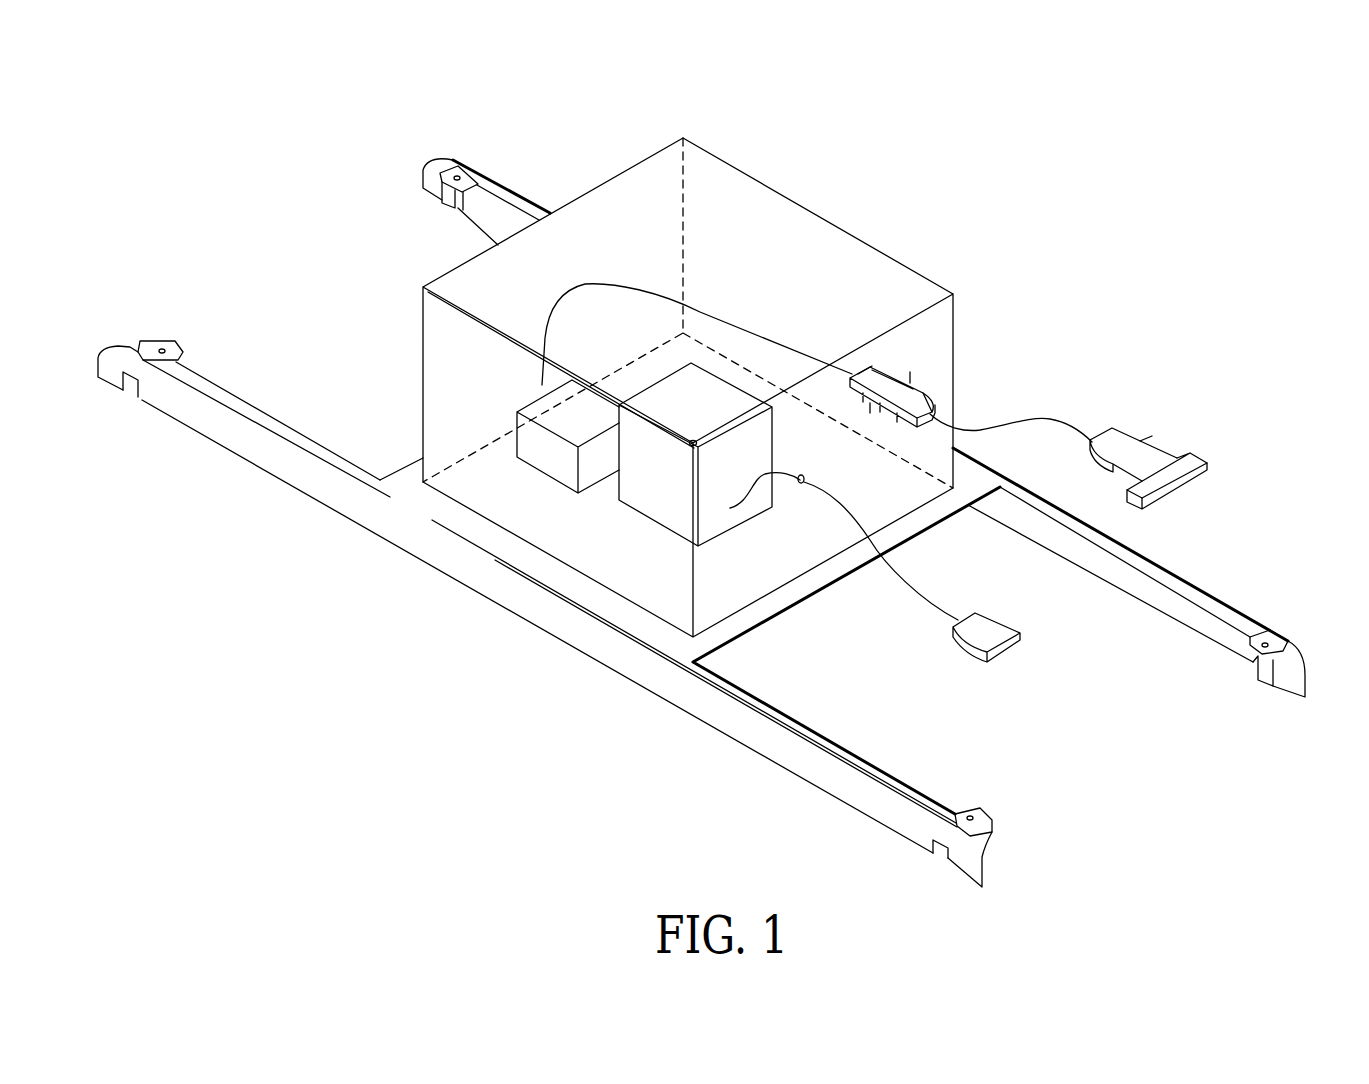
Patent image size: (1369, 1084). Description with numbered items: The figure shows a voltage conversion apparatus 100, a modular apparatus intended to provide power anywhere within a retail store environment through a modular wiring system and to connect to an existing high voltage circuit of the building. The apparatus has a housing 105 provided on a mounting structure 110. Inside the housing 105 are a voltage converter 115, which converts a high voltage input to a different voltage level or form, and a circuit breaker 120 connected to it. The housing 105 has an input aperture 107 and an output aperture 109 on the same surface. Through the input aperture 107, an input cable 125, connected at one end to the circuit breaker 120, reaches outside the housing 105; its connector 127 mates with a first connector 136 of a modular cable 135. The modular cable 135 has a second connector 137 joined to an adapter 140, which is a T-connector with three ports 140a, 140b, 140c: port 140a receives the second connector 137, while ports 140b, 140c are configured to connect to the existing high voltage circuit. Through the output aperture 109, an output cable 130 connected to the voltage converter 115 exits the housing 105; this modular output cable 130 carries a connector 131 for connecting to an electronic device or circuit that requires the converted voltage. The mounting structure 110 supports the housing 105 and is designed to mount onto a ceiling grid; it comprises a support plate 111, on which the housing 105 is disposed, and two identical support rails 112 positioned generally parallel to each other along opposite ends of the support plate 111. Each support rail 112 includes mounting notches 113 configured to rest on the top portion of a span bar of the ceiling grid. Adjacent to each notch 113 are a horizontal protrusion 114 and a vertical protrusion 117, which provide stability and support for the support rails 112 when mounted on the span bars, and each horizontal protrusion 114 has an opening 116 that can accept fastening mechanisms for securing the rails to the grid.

The voltage conversion apparatus 100 is at (900, 143).
The housing 105 is at (624, 180).
The input aperture 107 is at (898, 372).
The output aperture 109 is at (800, 485).
The mounting structure 110 is at (462, 538).
The support plate 111 is at (522, 568).
The support rails 112 is at (1240, 615).
The mounting notches 113 is at (134, 392).
The horizontal protrusion 114 is at (153, 346).
The voltage converter 115 is at (625, 493).
The opening 116 is at (162, 349).
The vertical protrusion 117 is at (425, 186).
The circuit breaker 120 is at (548, 465).
The input cable 125 is at (717, 311).
The connector 127 is at (882, 366).
The output cable 130 is at (912, 590).
The connector 131 is at (999, 616).
The modular cable 135 is at (1055, 422).
The first connector 136 is at (932, 387).
The second connector 137 is at (1148, 435).
The adapter 140 is at (1176, 488).
The port 140a is at (1123, 437).
The port 140b is at (1200, 456).
The port 140c is at (1135, 514).